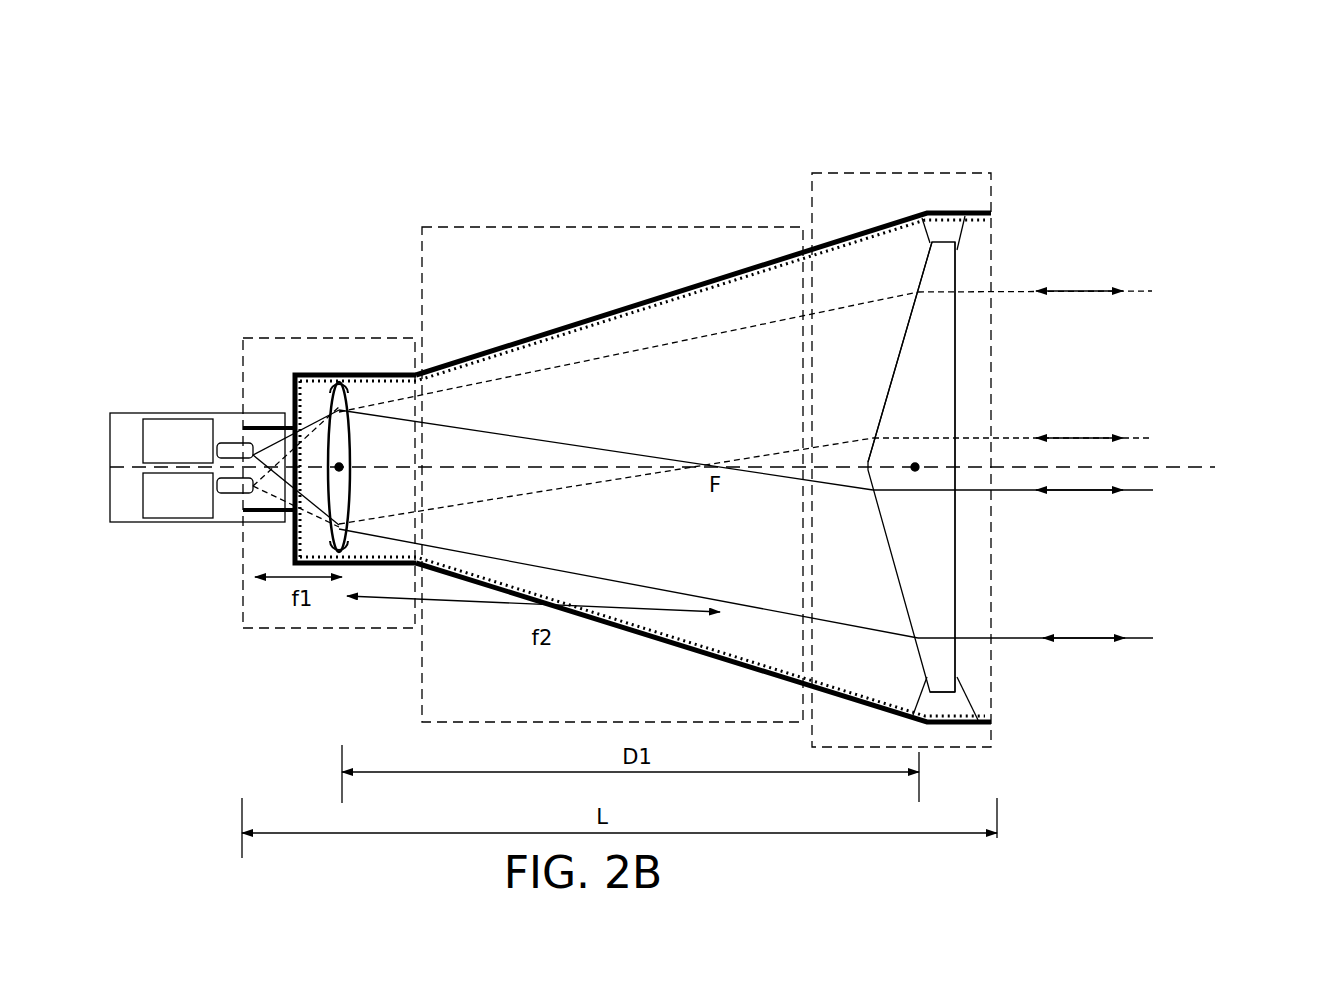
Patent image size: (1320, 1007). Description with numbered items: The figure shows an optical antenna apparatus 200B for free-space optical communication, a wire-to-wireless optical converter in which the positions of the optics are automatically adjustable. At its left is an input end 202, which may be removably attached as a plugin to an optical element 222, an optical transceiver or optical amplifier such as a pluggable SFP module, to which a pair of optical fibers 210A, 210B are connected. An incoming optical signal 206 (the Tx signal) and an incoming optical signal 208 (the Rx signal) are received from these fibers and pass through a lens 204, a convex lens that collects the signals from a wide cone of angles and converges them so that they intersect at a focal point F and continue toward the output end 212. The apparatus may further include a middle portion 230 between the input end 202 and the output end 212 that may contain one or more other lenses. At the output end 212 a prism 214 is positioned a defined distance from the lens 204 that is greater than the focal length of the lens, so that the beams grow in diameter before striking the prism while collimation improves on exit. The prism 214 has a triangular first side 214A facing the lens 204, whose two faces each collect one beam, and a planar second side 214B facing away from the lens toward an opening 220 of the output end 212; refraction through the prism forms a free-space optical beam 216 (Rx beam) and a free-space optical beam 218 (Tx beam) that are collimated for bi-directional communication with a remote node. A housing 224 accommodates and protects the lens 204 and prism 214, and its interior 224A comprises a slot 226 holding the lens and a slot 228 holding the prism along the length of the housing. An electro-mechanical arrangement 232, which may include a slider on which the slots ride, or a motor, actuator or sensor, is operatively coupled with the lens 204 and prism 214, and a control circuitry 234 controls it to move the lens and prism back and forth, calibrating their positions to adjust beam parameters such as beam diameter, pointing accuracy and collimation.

The optical antenna apparatus 200B is at (1244, 141).
The input end 202 is at (255, 337).
The lens 204 is at (350, 383).
The incoming optical signal 206 is at (263, 440).
The incoming optical signal 208 is at (270, 493).
The optical fiber 210A is at (233, 440).
The optical fiber 210B is at (228, 493).
The output end 212 is at (905, 172).
The prism 214 is at (952, 272).
The first side 214A is at (895, 367).
The second side 214B is at (955, 310).
The free-space optical beam 216 is at (1121, 334).
The free-space optical beam 218 is at (1158, 613).
The opening 220 is at (977, 683).
The optical element 222 is at (133, 523).
The housing 224 is at (490, 347).
The interior 224A is at (673, 113).
The slot 226 is at (337, 380).
The slot 228 is at (935, 227).
The middle portion 230 is at (555, 227).
The electro-mechanical arrangement 232 is at (305, 375).
The control circuitry 234 is at (294, 562).